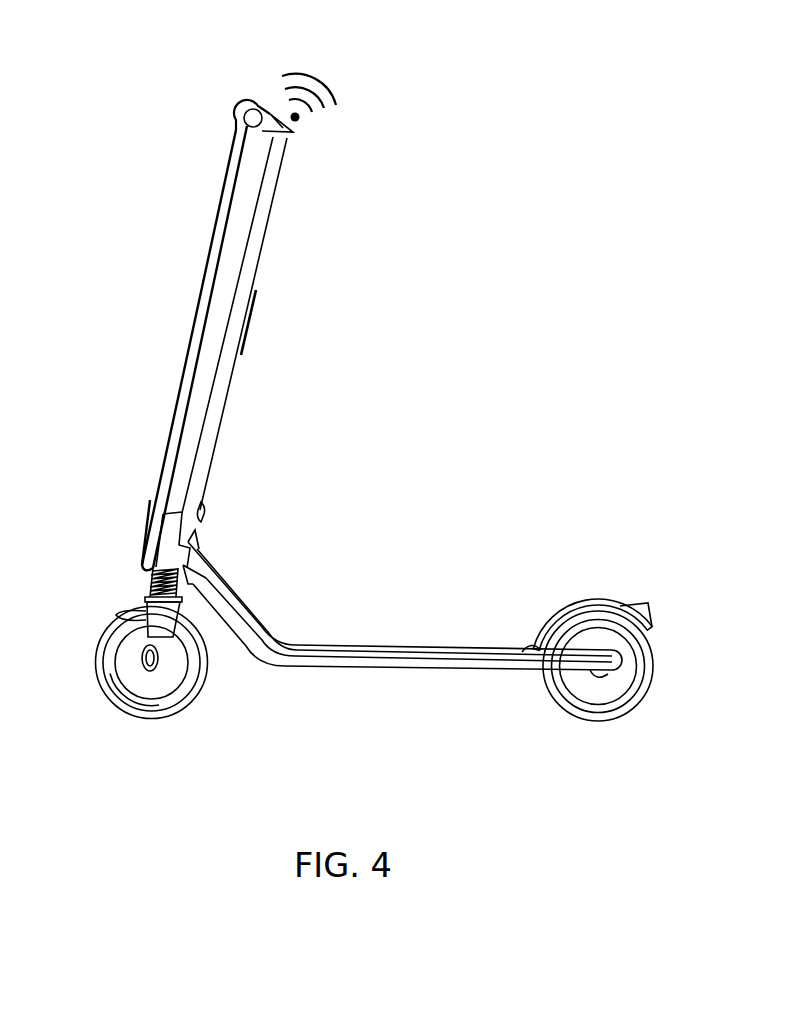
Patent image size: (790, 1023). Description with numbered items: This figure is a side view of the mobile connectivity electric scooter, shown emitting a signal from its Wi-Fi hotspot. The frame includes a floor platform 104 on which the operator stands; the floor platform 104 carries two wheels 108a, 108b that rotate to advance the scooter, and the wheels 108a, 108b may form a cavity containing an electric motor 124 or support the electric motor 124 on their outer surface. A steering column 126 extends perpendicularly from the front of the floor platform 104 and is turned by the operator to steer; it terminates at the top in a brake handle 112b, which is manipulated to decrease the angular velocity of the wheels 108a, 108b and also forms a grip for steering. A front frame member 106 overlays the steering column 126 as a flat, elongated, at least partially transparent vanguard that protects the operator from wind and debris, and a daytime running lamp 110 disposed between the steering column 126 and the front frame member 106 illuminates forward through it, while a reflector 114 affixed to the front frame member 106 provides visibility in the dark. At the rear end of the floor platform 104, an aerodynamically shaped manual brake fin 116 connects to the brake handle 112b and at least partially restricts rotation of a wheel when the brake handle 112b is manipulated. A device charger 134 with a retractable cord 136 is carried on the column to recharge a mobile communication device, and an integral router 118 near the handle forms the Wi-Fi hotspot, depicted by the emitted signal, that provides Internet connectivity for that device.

The floor platform 104 is at (378, 658).
The front frame member 106 is at (202, 405).
The wheel 108a is at (106, 700).
The wheel 108b is at (556, 695).
The daytime running lamp 110 is at (165, 430).
The brake handle 112b is at (252, 116).
The reflector 114 is at (148, 528).
The manual brake fin 116 is at (588, 604).
The integral router 118 is at (289, 136).
The electric motor 124 is at (158, 682).
The steering column 126 is at (238, 340).
The device charger 134 is at (203, 498).
The retractable cord 136 is at (221, 432).